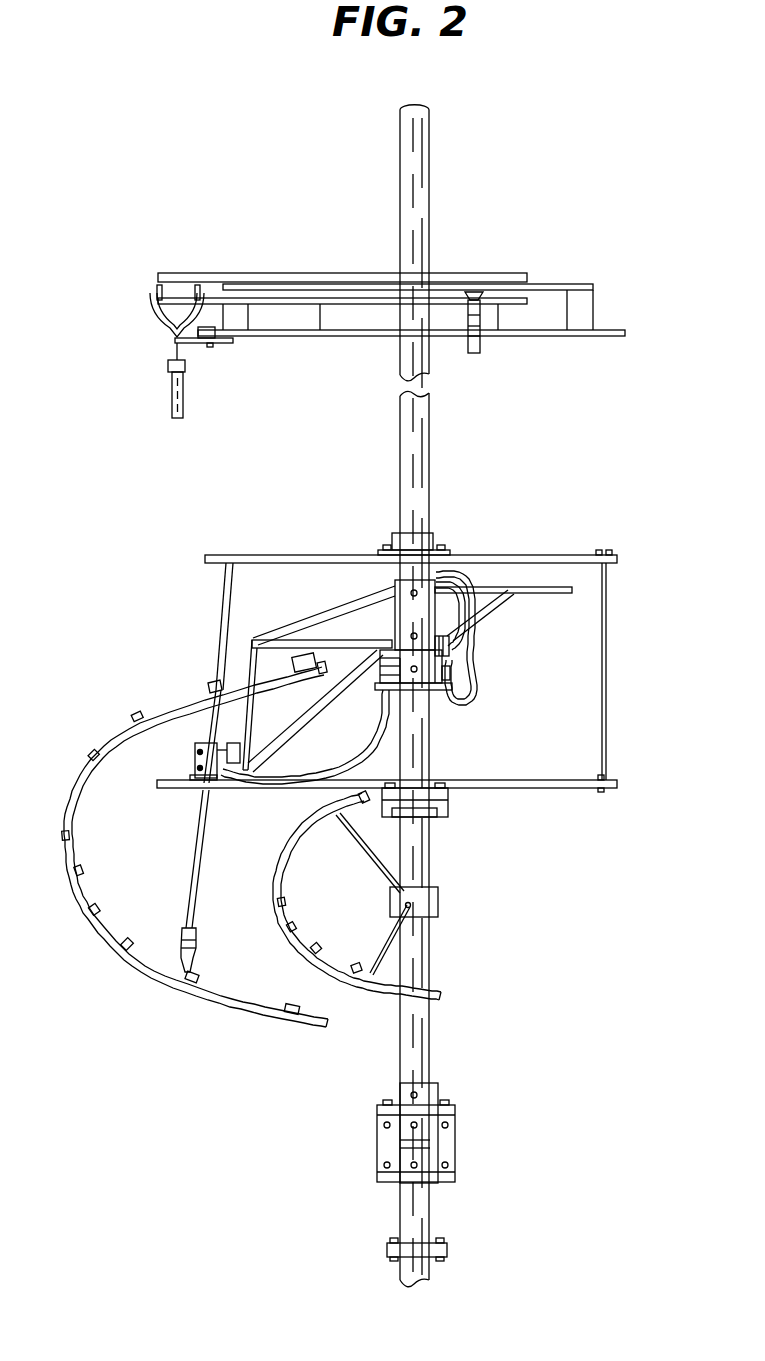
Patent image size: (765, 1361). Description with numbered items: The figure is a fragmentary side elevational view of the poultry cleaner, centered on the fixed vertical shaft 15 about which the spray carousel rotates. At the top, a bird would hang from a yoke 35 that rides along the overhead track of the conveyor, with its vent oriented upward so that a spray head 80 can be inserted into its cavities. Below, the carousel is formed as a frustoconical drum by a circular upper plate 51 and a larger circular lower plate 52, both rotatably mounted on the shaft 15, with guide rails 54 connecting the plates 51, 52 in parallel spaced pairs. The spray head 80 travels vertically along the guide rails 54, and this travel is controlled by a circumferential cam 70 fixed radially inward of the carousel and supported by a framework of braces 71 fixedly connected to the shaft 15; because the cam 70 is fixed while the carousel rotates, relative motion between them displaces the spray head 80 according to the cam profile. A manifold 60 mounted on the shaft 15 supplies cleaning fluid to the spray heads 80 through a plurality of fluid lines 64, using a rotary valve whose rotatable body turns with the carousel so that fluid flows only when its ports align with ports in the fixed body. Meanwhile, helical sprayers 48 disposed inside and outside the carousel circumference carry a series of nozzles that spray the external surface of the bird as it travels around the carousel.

The shaft 15 is at (430, 440).
The yoke 35 is at (157, 317).
The helical sprayers 48 is at (112, 947).
The upper plate 51 is at (518, 555).
The lower plate 52 is at (513, 790).
The guide rails 54 is at (227, 633).
The manifold 60 is at (438, 702).
The fluid lines 64 is at (380, 700).
The cam 70 is at (212, 728).
The braces 71 is at (267, 750).
The spray head 80 is at (185, 885).